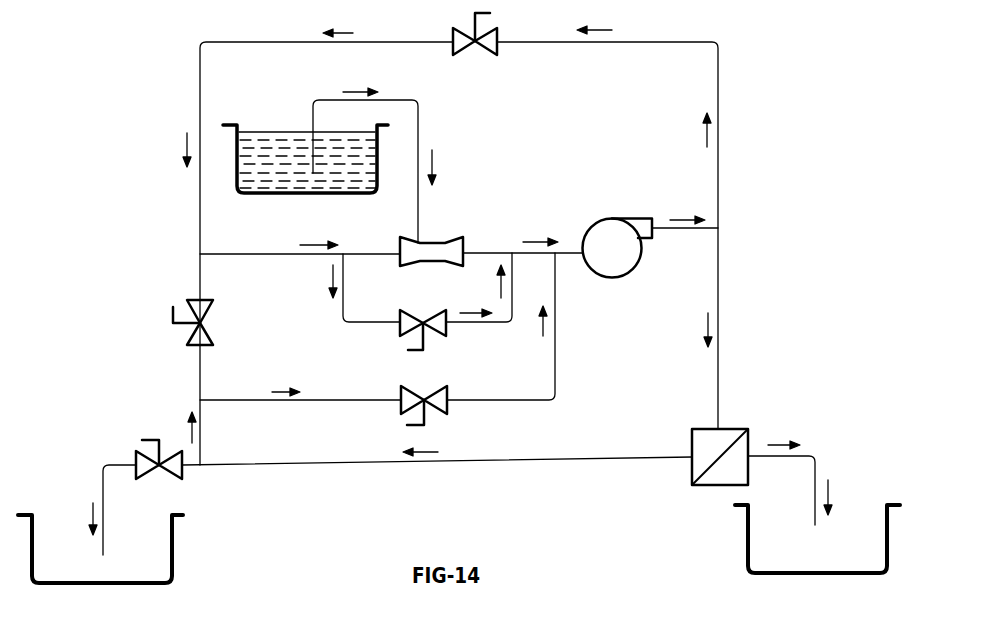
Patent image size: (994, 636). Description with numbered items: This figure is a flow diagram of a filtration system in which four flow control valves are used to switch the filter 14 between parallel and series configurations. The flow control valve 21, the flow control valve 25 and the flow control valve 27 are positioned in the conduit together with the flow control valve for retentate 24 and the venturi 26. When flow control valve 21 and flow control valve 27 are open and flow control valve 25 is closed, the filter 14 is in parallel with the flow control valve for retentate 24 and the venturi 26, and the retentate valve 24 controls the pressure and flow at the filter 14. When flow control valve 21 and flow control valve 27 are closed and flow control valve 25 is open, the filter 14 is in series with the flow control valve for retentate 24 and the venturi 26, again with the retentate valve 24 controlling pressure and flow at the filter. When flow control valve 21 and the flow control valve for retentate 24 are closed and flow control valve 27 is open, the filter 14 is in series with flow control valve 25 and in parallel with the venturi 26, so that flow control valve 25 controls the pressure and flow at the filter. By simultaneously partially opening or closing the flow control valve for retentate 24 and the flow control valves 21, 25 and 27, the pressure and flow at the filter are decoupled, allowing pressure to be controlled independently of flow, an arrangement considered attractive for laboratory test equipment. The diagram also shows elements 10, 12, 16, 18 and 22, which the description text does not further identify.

The treatment tank 10 is at (296, 193).
The pump 12 is at (634, 272).
The filter 14 is at (748, 429).
The collection tank 16 is at (745, 532).
The collection tank 18 is at (175, 535).
The flow control valve 21 is at (447, 410).
The valve 22 is at (148, 435).
The flow control valve for retentate 24 is at (443, 340).
The flow control valve 25 is at (192, 295).
The venturi 26 is at (447, 238).
The flow control valve 27 is at (497, 47).